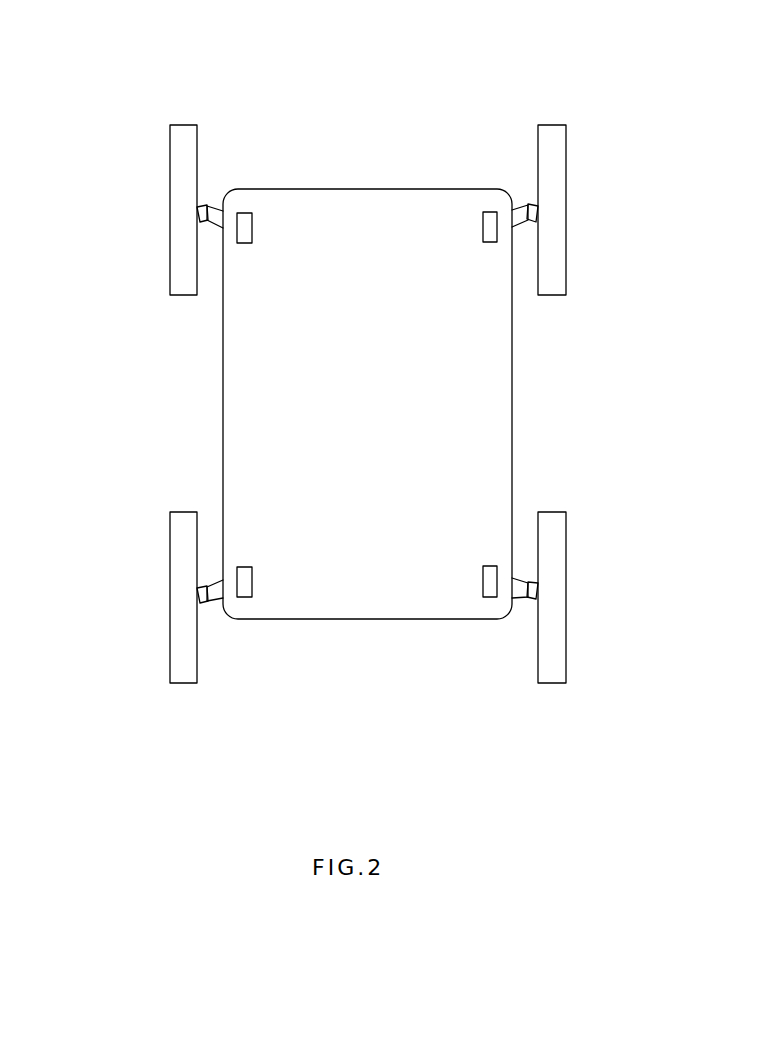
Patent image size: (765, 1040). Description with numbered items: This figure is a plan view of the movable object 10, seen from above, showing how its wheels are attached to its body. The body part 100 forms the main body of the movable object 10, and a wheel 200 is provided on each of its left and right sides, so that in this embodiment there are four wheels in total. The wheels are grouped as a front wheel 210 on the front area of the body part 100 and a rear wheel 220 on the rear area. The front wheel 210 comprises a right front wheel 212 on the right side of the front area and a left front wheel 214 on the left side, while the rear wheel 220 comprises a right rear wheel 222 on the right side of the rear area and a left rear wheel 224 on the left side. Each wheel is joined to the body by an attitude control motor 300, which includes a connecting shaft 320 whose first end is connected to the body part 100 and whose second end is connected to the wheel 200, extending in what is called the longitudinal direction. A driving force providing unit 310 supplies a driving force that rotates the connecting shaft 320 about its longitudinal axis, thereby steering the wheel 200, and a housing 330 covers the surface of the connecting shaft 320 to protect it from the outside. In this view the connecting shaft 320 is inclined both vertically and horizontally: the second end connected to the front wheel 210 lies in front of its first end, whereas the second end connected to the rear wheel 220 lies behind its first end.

The movable object 10 is at (112, 41).
The body part 100 is at (367, 198).
The wheel 200 is at (86, 367).
The front wheel 210 is at (148, 338).
The right front wheel 212 is at (538, 137).
The left front wheel 214 is at (197, 137).
The rear wheel 220 is at (148, 413).
The right rear wheel 222 is at (538, 657).
The left rear wheel 224 is at (197, 657).
The attitude control motor 300 is at (641, 365).
The driving force providing unit 310 is at (252, 226).
The connecting shaft 320 is at (537, 213).
The housing 330 is at (518, 223).